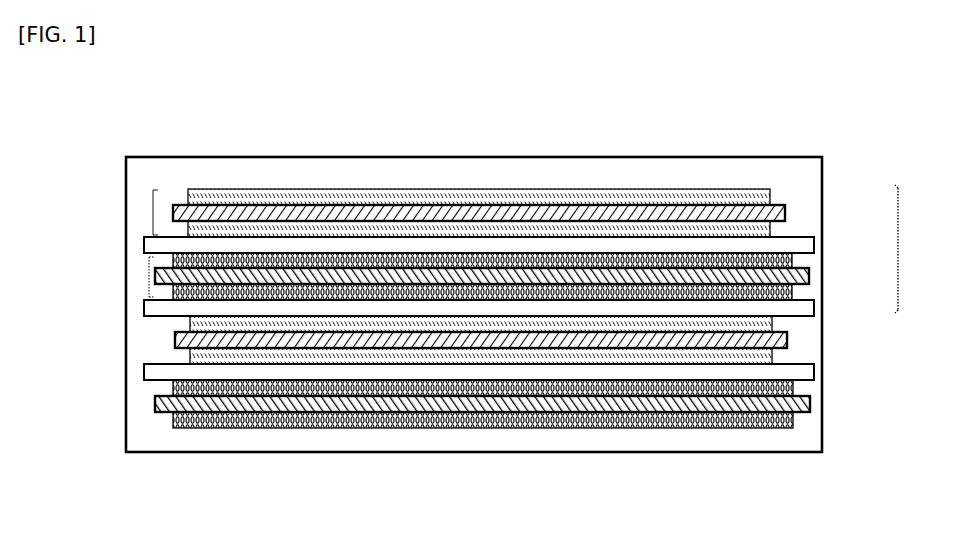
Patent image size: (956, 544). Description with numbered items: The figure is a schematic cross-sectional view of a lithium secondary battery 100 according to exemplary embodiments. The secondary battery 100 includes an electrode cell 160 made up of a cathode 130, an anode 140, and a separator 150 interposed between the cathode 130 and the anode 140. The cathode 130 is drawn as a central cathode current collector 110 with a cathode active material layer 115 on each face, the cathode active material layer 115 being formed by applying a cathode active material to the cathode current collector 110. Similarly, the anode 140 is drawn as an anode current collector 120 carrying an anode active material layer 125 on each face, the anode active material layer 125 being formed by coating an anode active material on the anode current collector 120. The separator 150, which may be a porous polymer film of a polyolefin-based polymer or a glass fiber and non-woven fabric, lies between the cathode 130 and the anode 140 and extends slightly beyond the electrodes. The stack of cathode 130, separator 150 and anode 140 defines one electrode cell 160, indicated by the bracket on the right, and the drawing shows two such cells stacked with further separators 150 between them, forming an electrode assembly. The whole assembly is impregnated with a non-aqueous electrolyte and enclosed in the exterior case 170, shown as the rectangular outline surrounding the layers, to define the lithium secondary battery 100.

The secondary battery 100 is at (440, 97).
The cathode current collector 110 is at (786, 210).
The cathode active material layer 115 is at (771, 193).
The anode current collector 120 is at (810, 276).
The anode active material layer 125 is at (793, 260).
The cathode 130 is at (153, 207).
The anode 140 is at (149, 290).
The separator 150 is at (143, 245).
The electrode cell 160 is at (912, 249).
The case 170 is at (247, 453).